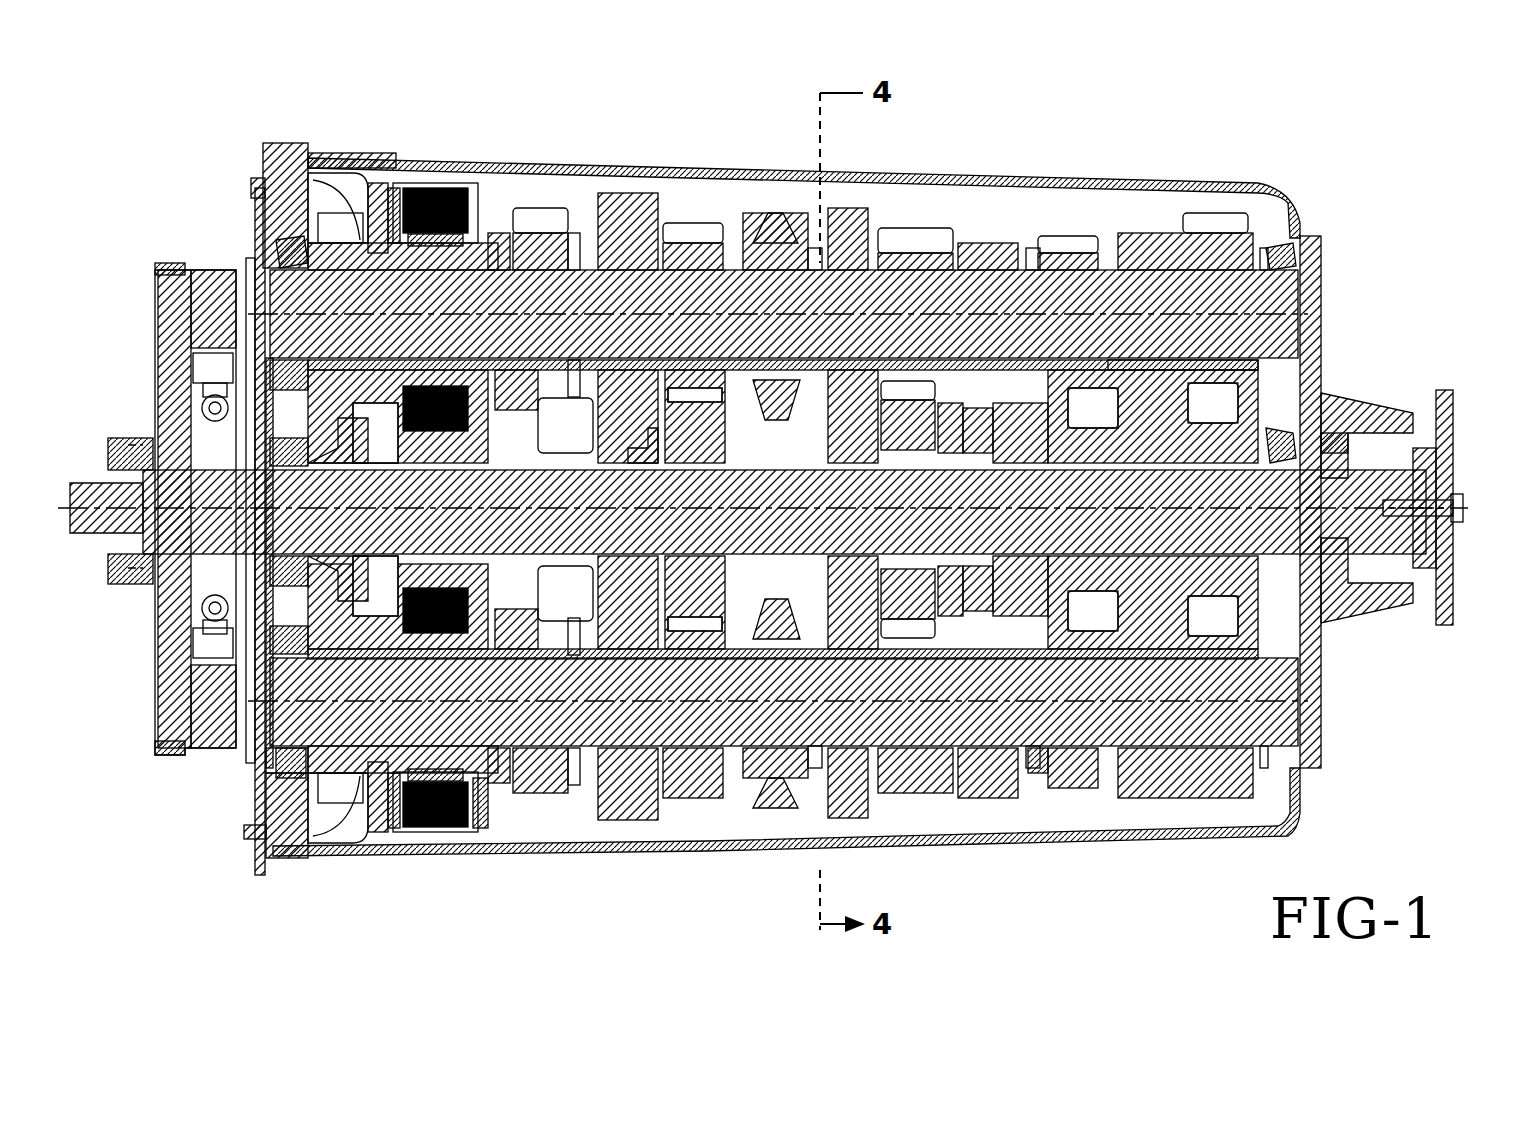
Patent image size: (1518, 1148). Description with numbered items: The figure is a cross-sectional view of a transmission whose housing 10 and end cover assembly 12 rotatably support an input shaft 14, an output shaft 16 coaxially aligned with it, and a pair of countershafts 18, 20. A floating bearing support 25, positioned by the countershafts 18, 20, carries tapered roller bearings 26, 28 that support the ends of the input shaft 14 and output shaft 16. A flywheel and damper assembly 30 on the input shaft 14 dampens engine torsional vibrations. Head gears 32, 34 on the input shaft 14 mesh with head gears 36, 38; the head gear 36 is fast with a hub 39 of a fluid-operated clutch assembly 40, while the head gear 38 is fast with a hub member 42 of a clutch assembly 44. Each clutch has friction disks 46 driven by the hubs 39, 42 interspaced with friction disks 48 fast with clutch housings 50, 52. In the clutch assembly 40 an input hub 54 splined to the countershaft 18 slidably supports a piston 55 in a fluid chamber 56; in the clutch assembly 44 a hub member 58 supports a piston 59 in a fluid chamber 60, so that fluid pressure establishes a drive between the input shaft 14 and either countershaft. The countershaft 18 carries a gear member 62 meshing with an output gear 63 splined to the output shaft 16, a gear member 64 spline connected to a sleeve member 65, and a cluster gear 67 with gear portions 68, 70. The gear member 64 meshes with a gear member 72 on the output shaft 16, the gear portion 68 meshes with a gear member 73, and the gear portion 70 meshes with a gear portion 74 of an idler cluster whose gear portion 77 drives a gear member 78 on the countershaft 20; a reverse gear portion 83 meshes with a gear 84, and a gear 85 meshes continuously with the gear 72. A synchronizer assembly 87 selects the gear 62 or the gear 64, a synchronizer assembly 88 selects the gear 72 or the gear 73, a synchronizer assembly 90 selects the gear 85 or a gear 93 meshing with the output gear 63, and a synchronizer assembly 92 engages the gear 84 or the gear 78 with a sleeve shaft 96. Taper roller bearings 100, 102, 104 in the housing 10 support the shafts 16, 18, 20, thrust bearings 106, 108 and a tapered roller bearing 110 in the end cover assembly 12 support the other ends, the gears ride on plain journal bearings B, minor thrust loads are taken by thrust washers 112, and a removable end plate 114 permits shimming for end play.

The housing 10 is at (972, 178).
The end cover assembly 12 is at (245, 190).
The input shaft 14 is at (140, 510).
The output shaft 16 is at (1325, 515).
The countershaft 18 is at (1280, 300).
The countershaft 20 is at (1278, 685).
The floating bearing support 25 is at (620, 210).
The tapered roller bearing 26 is at (590, 430).
The tapered roller bearing 28 is at (630, 445).
The flywheel and damper assembly 30 is at (140, 325).
The head gear 32 is at (600, 560).
The head gear 34 is at (600, 440).
The head gear 36 is at (530, 210).
The head gear 38 is at (530, 780).
The hub 39 is at (492, 240).
The fluid-operated clutch assembly 40 is at (360, 185).
The hub member 42 is at (470, 775).
The fluid-operated clutch assembly 44 is at (330, 790).
The friction disks 46 is at (440, 250).
The friction disks 48 is at (425, 200).
The clutch housing 50 is at (385, 200).
The clutch housing 52 is at (385, 815).
The input hub 54 is at (270, 180).
The piston 55 is at (320, 230).
The fluid chamber 56 is at (305, 250).
The hub member 58 is at (290, 770).
The piston 59 is at (345, 795).
The fluid chamber 60 is at (295, 790).
The gear member 62 is at (755, 240).
The output gear 63 is at (685, 395).
The gear member 64 is at (840, 210).
The sleeve member 65 is at (1005, 250).
The cluster gear 67 is at (1140, 250).
The gear portion 68 is at (1060, 240).
The gear portion 70 is at (1200, 215).
The gear member 72 is at (805, 440).
The gear member 73 is at (1040, 400).
The gear portion 74 is at (1330, 600).
The gear portion 77 is at (1160, 385).
The gear member 78 is at (1150, 775).
The gear portion 83 is at (920, 380).
The gear 84 is at (900, 790).
The gear 85 is at (845, 800).
The synchronizer assembly 87 is at (770, 218).
The synchronizer assembly 88 is at (960, 395).
The synchronizer assembly 90 is at (760, 800).
The synchronizer assembly 92 is at (980, 795).
The gear 93 is at (700, 780).
The sleeve shaft 96 is at (1010, 760).
The taper roller bearing 100 is at (1292, 745).
The taper roller bearing 102 is at (1270, 255).
The taper roller bearing 104 is at (1265, 445).
The thrust bearing 106 is at (240, 255).
The thrust bearing 108 is at (270, 750).
The tapered roller bearing 110 is at (270, 440).
The thrust washers 112 is at (800, 235).
The end plate 114 is at (243, 270).
The plain journal bearings B is at (716, 258).